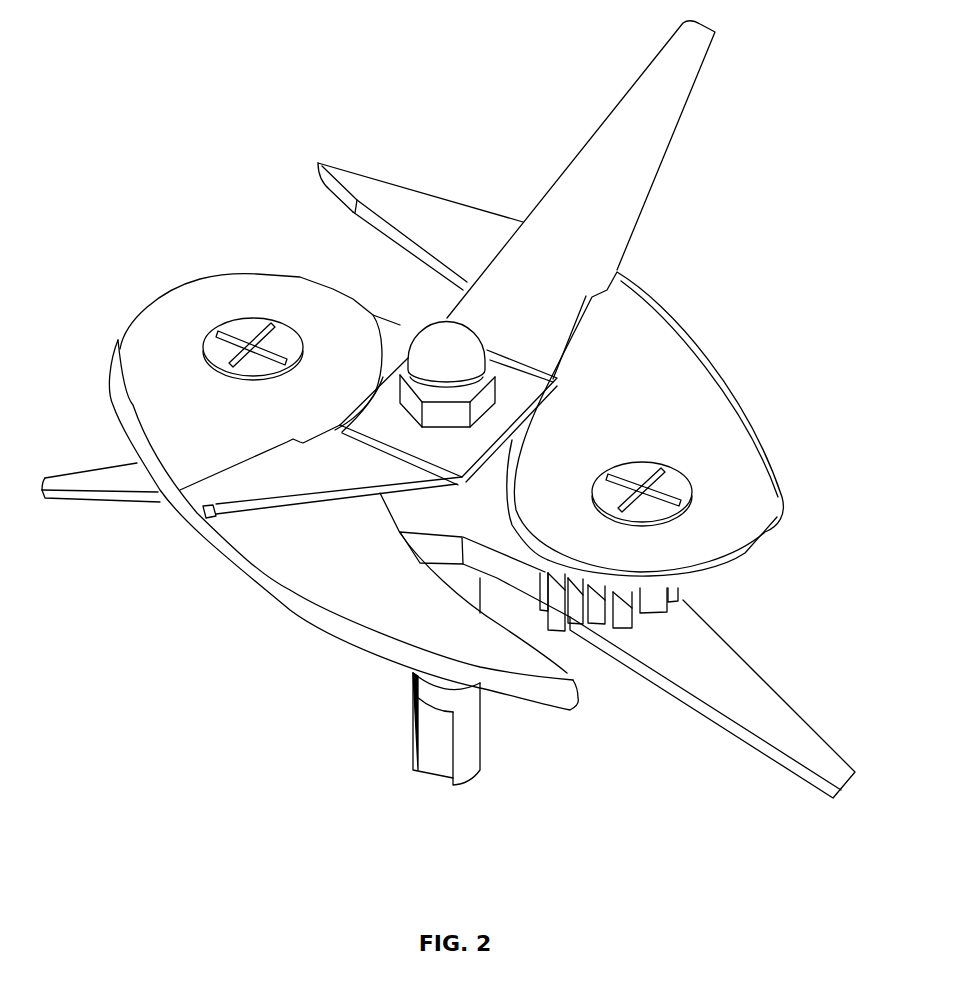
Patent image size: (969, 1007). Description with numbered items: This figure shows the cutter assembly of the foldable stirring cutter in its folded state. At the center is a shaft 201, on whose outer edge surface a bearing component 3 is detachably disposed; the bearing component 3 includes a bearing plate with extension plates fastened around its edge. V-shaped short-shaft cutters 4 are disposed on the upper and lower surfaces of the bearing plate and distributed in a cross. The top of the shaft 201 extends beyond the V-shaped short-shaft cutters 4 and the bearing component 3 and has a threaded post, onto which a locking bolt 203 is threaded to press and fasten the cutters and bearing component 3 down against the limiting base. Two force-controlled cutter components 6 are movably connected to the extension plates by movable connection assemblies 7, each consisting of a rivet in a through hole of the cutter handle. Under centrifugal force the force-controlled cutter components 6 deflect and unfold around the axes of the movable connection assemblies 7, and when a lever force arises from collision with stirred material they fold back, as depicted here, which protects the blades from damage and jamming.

The bearing component 3 is at (448, 507).
The V-shaped short-shaft cutter 4 is at (632, 143).
The force-controlled cutter component 6 is at (237, 562).
The movable connection assembly 7 is at (690, 470).
The shaft 201 is at (437, 732).
The locking bolt 203 is at (448, 347).